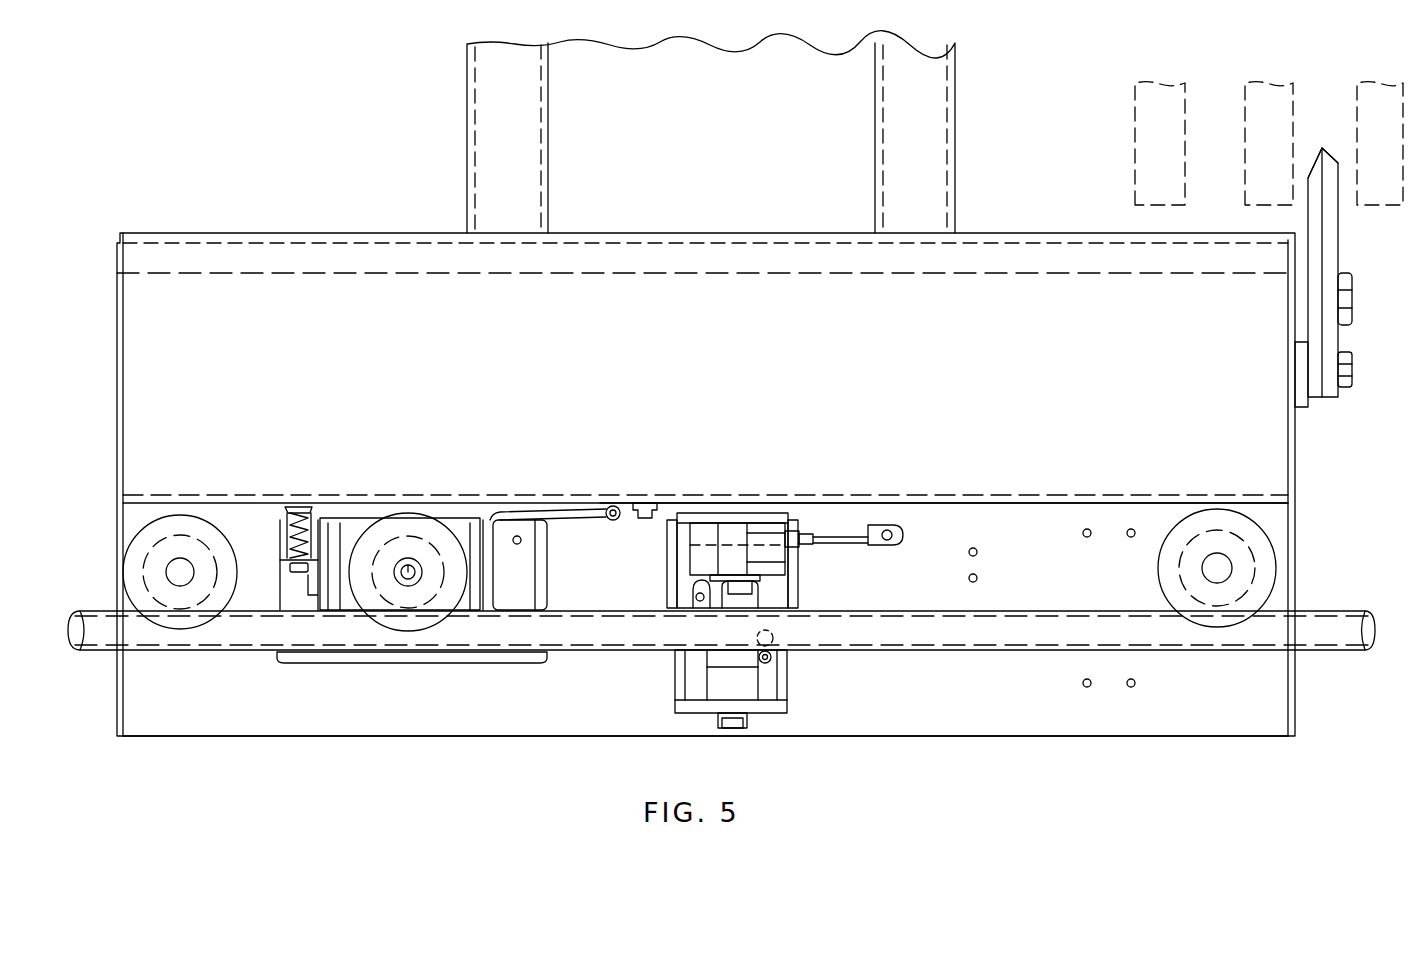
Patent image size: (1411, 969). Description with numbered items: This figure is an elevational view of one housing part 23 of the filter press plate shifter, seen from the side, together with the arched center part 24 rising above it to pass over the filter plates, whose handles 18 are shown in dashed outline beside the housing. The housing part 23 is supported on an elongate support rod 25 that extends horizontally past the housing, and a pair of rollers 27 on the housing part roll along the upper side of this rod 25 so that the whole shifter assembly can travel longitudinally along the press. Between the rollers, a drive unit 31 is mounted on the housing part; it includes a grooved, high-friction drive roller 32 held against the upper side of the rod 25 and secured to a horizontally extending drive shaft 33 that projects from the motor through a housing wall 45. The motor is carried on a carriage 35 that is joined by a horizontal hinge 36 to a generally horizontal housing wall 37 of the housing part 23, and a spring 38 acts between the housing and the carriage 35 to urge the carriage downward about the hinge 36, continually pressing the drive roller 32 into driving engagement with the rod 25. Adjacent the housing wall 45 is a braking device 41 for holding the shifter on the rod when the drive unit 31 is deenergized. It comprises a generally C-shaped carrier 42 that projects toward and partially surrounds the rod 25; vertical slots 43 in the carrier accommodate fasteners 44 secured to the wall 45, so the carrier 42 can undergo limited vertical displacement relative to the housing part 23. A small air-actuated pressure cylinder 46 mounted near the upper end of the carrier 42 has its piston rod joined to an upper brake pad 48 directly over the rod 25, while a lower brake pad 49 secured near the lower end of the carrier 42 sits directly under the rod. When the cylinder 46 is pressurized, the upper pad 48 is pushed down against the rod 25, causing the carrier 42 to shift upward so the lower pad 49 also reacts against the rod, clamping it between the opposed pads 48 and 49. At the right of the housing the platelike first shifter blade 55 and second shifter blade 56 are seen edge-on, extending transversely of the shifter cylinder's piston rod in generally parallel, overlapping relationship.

The handles 18 is at (1245, 110).
The housing part 23 is at (1058, 740).
The arched center part 24 is at (498, 98).
The support rod 25 is at (610, 635).
The rollers 27 is at (178, 622).
The drive unit 31 is at (455, 508).
The drive roller 32 is at (400, 530).
The drive shaft 33 is at (412, 578).
The carriage 35 is at (548, 515).
The hinge 36 is at (612, 520).
The housing wall 37 is at (1057, 497).
The spring 38 is at (298, 508).
The braking device 41 is at (760, 490).
The carrier 42 is at (800, 578).
The vertical slots 43 is at (770, 662).
The fasteners 44 is at (772, 645).
The housing wall 45 is at (972, 718).
The pressure cylinder 46 is at (710, 530).
The upper brake pad 48 is at (752, 597).
The lower brake pad 49 is at (740, 660).
The first shifter blade 55 is at (1330, 208).
The second shifter blade 56 is at (1315, 185).